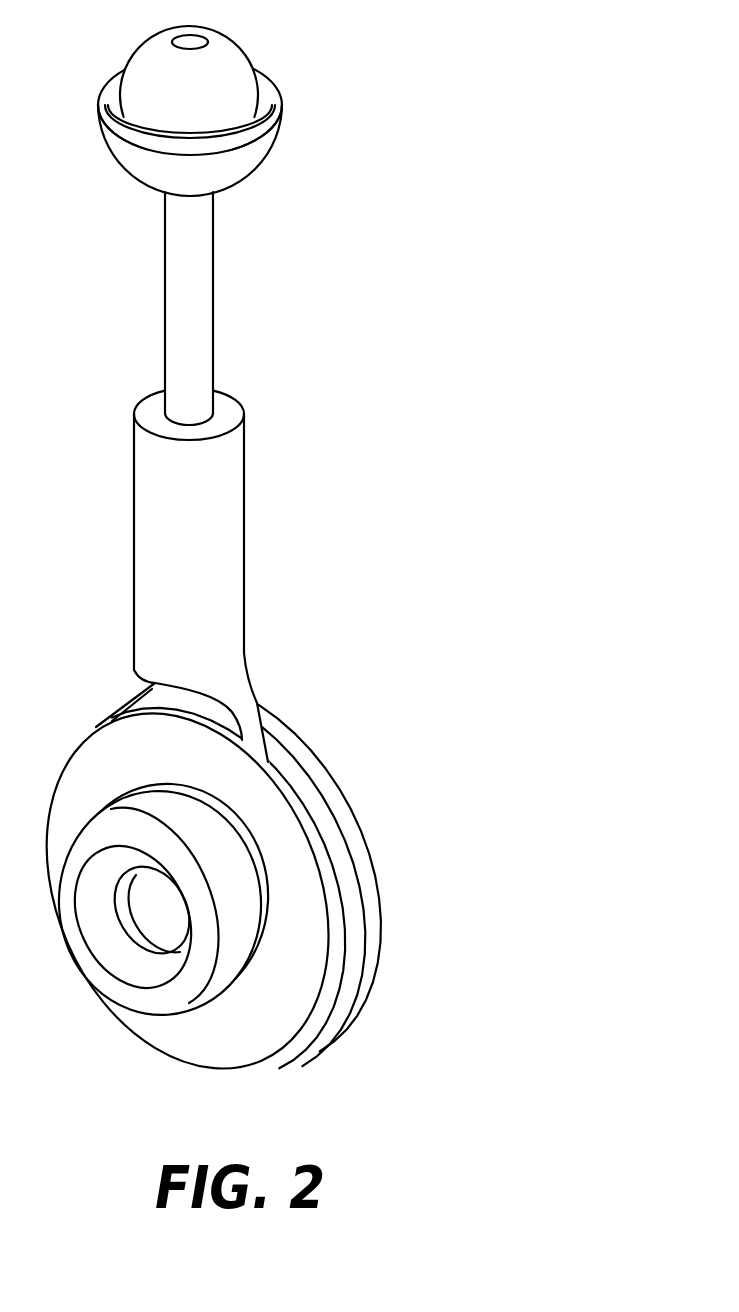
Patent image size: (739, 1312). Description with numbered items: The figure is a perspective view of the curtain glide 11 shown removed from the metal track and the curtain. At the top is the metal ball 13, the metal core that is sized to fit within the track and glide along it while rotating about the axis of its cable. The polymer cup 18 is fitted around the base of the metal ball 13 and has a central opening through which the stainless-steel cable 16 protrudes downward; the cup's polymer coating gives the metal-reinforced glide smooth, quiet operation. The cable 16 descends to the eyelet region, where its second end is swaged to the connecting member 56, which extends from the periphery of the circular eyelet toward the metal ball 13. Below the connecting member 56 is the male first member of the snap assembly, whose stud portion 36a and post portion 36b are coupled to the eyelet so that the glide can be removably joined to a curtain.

The curtain glide 11 is at (298, 571).
The metal ball 13 is at (245, 50).
The polymer cup 18 is at (272, 148).
The cable 16 is at (268, 290).
The connecting member 56 is at (225, 538).
The stud portion 36a is at (180, 1027).
The post portion 36b is at (345, 815).